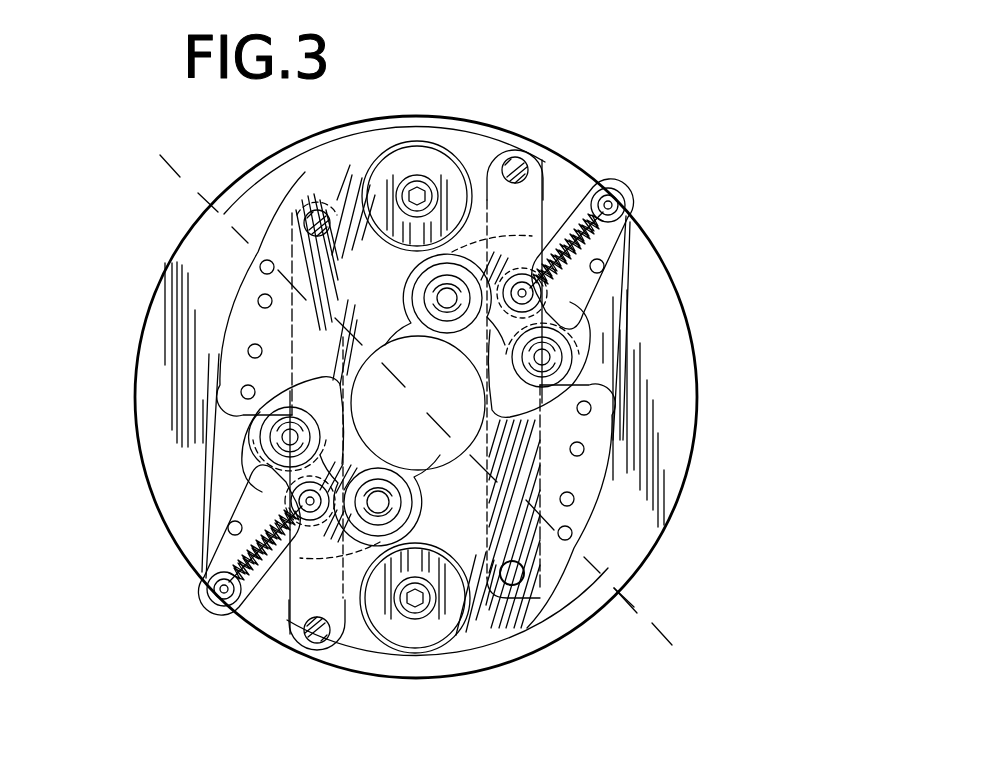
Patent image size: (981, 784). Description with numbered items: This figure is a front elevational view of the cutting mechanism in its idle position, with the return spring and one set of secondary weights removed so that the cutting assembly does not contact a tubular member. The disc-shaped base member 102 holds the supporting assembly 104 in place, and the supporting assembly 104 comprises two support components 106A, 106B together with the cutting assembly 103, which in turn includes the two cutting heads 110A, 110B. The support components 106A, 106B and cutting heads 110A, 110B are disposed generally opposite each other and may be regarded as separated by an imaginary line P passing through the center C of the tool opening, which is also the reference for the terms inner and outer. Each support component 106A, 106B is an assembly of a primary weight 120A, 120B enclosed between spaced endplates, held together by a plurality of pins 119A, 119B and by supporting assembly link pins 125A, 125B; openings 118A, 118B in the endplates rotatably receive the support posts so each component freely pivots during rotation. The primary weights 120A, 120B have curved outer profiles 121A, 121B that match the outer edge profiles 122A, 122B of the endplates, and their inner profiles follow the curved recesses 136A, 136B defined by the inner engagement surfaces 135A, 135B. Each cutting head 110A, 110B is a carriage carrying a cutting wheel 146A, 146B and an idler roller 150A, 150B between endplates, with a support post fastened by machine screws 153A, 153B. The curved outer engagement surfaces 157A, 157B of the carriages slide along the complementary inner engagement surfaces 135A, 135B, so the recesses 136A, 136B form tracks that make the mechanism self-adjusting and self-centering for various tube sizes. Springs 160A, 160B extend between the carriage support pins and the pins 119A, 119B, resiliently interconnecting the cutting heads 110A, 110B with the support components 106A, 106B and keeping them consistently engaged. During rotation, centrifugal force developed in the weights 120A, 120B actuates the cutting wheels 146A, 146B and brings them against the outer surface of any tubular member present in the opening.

The base member 102 is at (214, 214).
The cutting assembly 103 is at (248, 425).
The supporting assembly 104 is at (283, 236).
The support component 106A is at (250, 284).
The support component 106B is at (478, 618).
The cutting head 110A is at (525, 243).
The cutting head 110B is at (268, 470).
The opening 118A is at (430, 147).
The opening 118B is at (408, 658).
The pin 119A is at (250, 348).
The pin 119B is at (572, 495).
The primary weight 120A is at (413, 292).
The primary weight 120B is at (480, 535).
The curved outer profile 121A is at (387, 134).
The curved outer profile 121B is at (534, 606).
The outer edge profile 122A is at (513, 153).
The outer edge profile 122B is at (318, 648).
The supporting assembly link pin 125A is at (313, 208).
The supporting assembly link pin 125B is at (515, 571).
The inner engagement surface 135A is at (592, 187).
The inner engagement surface 135B is at (262, 498).
The curved recess 136A is at (565, 316).
The curved recess 136B is at (300, 490).
The cutting wheel 146A is at (428, 326).
The cutting wheel 146B is at (403, 498).
The idler roller 150A is at (586, 394).
The idler roller 150B is at (256, 432).
The machine screw 153A is at (590, 278).
The machine screw 153B is at (250, 605).
The outer engagement surface 157A is at (572, 362).
The outer engagement surface 157B is at (215, 507).
The spring 160A is at (630, 216).
The spring 160B is at (212, 608).
The center C is at (393, 383).
The imaginary line P is at (650, 628).